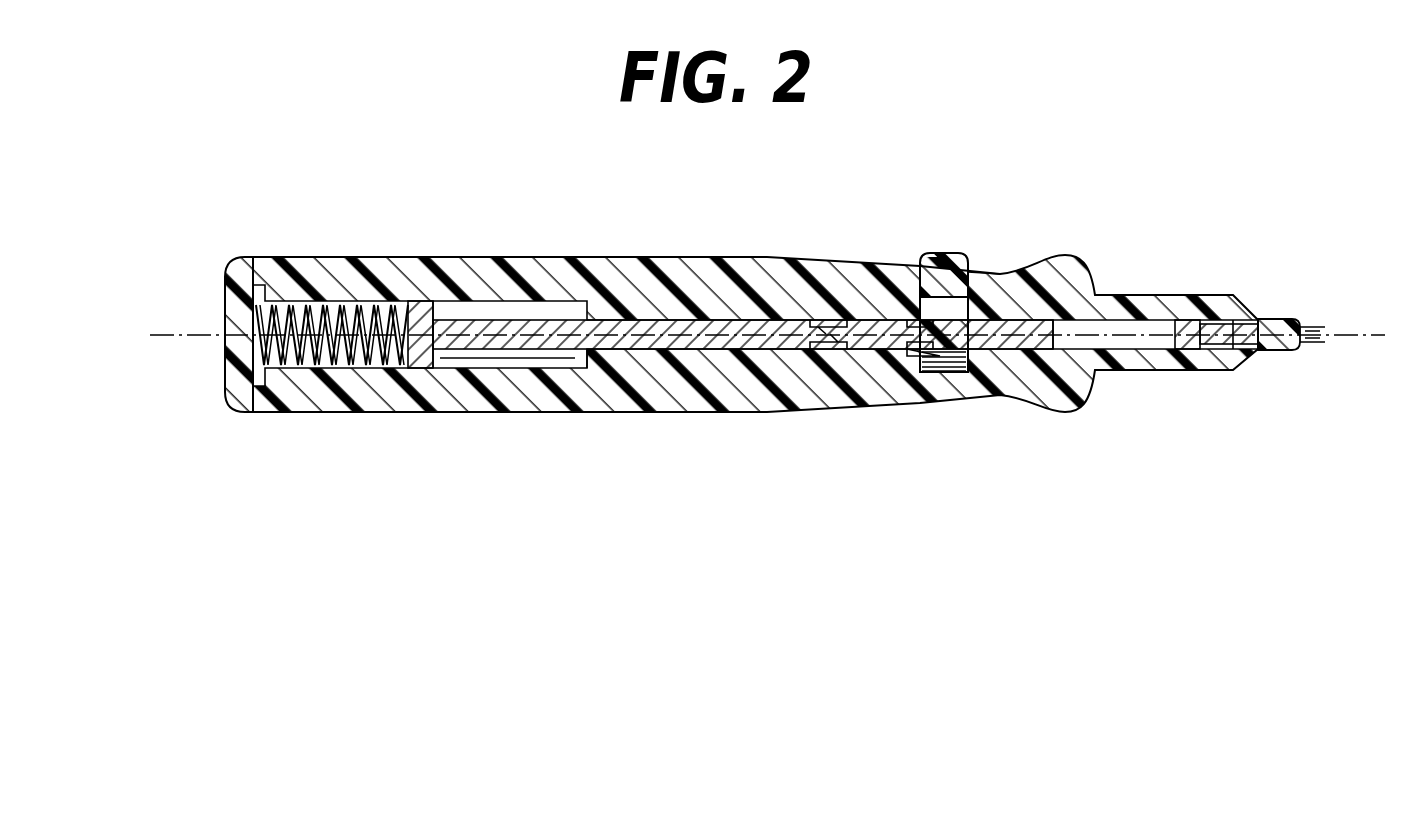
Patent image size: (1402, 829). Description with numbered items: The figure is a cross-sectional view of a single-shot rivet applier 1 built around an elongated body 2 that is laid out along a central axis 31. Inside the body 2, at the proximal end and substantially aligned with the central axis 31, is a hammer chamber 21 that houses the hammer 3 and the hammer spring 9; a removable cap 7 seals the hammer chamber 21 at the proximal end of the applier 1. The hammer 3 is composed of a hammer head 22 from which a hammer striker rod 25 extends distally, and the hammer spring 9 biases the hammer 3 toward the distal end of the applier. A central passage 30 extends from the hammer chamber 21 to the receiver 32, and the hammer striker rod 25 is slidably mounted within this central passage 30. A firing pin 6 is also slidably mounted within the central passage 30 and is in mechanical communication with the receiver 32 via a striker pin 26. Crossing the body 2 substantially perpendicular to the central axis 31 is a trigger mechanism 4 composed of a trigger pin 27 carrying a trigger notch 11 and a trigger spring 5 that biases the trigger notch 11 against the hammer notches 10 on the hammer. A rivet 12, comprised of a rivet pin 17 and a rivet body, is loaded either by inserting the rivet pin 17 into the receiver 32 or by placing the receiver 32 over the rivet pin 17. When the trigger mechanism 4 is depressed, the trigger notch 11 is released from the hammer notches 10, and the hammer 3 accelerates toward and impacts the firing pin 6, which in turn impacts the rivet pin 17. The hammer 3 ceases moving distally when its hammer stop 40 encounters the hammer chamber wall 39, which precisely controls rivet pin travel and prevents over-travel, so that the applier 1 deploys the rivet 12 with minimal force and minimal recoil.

The rivet applier 1 is at (190, 434).
The body 2 is at (479, 250).
The hammer 3 is at (545, 322).
The trigger mechanism 4 is at (944, 247).
The trigger spring 5 is at (932, 374).
The firing pin 6 is at (1192, 352).
The removable cap 7 is at (243, 280).
The hammer spring 9 is at (307, 358).
The hammer notches 10 is at (852, 321).
The trigger notch 11 is at (926, 344).
The rivet 12 is at (1312, 346).
The rivet pin 17 is at (1282, 350).
The hammer chamber 21 is at (499, 357).
The hammer head 22 is at (418, 300).
The hammer striker rod 25 is at (999, 342).
The striker pin 26 is at (1247, 320).
The trigger pin 27 is at (972, 266).
The central passage 30 is at (1127, 345).
The central axis 31 is at (166, 330).
The receiver 32 is at (1282, 322).
The hammer chamber wall 39 is at (583, 368).
The hammer stop 40 is at (447, 358).